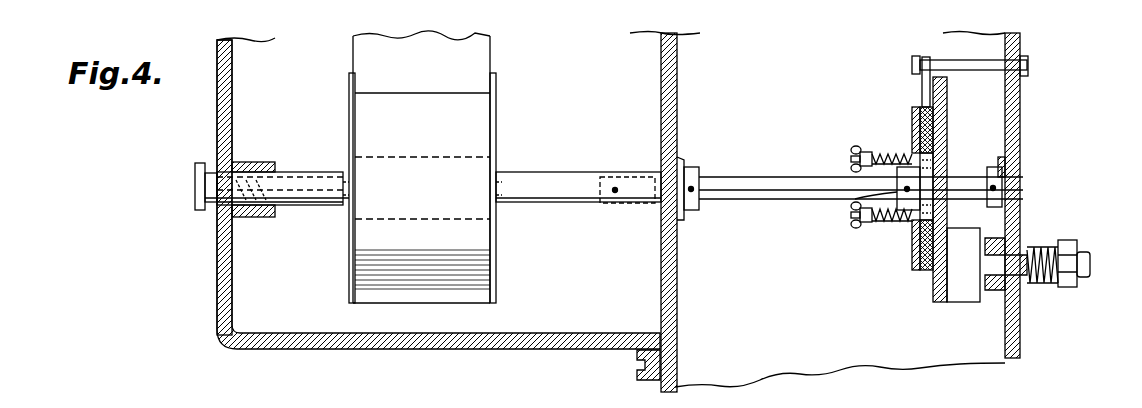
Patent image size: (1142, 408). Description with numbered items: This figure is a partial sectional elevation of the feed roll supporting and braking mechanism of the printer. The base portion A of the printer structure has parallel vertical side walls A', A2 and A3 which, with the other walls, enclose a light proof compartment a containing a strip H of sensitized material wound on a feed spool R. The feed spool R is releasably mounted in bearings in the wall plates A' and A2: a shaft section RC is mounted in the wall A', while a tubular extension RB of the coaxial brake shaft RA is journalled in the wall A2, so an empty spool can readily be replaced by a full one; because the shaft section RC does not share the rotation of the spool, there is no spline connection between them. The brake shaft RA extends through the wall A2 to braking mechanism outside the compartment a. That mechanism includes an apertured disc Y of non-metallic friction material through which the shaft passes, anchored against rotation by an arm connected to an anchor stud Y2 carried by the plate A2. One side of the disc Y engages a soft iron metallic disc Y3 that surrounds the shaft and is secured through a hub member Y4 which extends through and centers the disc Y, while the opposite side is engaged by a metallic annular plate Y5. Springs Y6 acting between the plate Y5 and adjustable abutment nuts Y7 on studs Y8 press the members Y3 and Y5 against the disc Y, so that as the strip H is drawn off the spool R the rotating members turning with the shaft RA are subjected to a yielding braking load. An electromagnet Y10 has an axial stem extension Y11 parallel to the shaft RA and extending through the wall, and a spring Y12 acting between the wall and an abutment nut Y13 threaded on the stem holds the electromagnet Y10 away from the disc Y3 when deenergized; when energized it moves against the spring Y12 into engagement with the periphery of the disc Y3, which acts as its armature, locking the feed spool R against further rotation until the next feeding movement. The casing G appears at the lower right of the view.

The base portion A is at (438, 215).
The side wall A' is at (216, 187).
The side wall A2 is at (677, 283).
The side wall A3 is at (1020, 325).
The gear casing G is at (840, 384).
The strip of sensitized material H is at (490, 47).
The feed spool R is at (496, 96).
The light proof compartment a is at (588, 91).
The shaft section RC is at (278, 172).
The tubular extension RB is at (552, 172).
The brake shaft RA is at (727, 177).
The apertured disc Y is at (930, 268).
The anchor stud Y2 is at (938, 60).
The metallic disc Y3 is at (933, 293).
The hub member Y4 is at (858, 198).
The metallic annular plate Y5 is at (912, 252).
The springs Y6 is at (905, 150).
The adjustable abutment nuts Y7 is at (862, 150).
The studs Y8 is at (851, 159).
The electromagnet Y10 is at (960, 295).
The axial stem extension Y11 is at (1090, 263).
The spring Y12 is at (1040, 250).
The abutment nut Y13 is at (1073, 246).